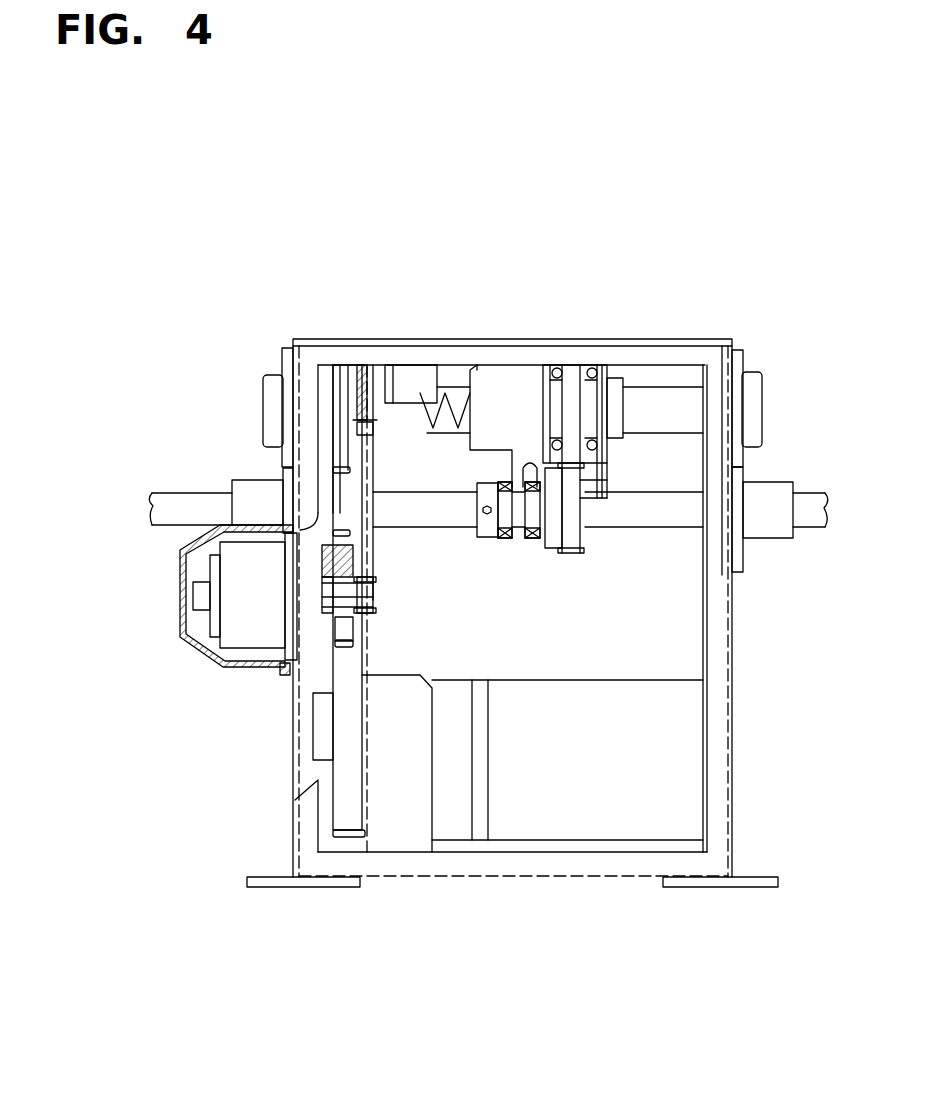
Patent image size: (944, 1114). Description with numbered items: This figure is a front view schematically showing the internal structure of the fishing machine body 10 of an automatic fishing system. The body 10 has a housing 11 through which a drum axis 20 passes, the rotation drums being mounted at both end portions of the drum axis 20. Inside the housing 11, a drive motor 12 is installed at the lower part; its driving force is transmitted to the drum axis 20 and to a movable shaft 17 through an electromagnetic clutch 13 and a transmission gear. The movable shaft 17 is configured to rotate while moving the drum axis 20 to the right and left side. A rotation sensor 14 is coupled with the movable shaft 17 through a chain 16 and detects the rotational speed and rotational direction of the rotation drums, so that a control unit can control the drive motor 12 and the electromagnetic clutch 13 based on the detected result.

The fishing machine body 10 is at (500, 180).
The housing 11 is at (565, 355).
The drive motor 12 is at (593, 793).
The electromagnetic clutch 13 is at (230, 620).
The rotation sensor 14 is at (407, 385).
The chain 16 is at (360, 410).
The movable shaft 17 is at (658, 400).
The drum axis 20 is at (187, 507).